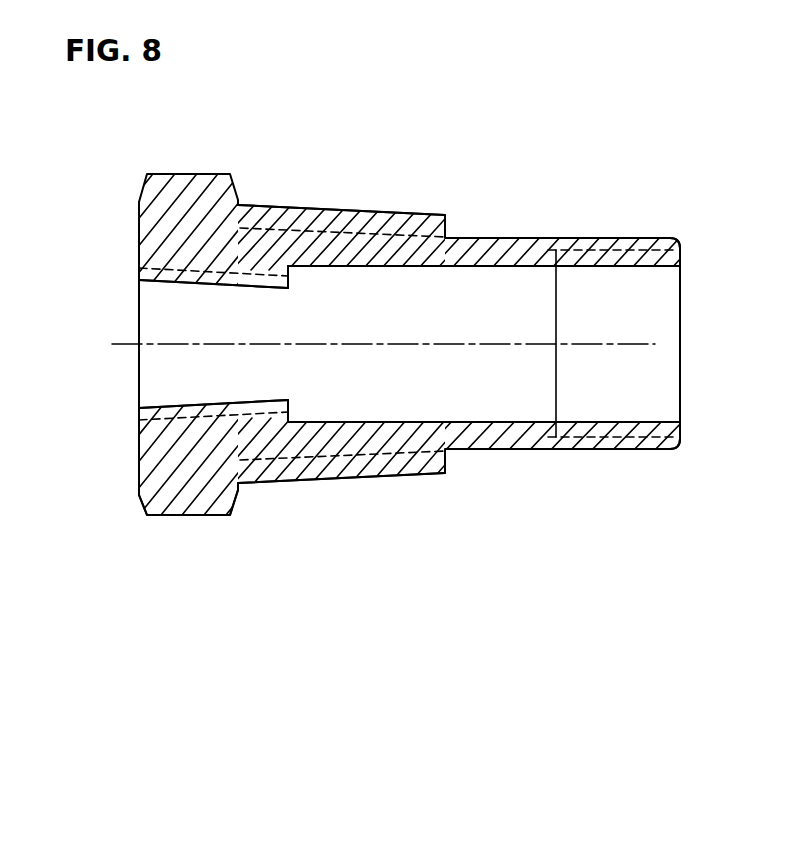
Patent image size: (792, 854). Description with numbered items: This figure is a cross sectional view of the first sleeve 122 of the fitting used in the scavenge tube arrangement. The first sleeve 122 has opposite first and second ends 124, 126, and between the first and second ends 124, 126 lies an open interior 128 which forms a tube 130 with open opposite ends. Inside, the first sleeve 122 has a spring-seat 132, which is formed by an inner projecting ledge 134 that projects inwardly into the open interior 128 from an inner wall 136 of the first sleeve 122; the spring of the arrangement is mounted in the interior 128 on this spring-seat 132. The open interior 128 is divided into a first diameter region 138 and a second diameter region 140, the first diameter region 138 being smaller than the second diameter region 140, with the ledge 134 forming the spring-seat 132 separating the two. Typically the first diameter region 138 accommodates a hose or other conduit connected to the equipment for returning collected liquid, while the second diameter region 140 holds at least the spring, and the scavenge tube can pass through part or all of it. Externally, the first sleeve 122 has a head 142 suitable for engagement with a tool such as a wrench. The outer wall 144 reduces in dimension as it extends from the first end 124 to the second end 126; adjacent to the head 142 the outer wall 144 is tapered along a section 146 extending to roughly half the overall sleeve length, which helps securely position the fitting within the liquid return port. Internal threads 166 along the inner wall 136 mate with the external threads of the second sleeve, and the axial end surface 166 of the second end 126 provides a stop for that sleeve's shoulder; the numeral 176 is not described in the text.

The first sleeve 122 is at (347, 139).
The first end 124 is at (138, 226).
The second end 126 is at (674, 247).
The open interior 128 is at (488, 416).
The tube 130 is at (478, 267).
The spring-seat 132 is at (289, 408).
The inner projecting ledge 134 is at (292, 282).
The inner wall 136 is at (388, 422).
The first diameter region 138 is at (147, 406).
The second diameter region 140 is at (660, 420).
The head 142 is at (177, 518).
The outer wall 144 is at (397, 212).
The tapered section 146 is at (332, 477).
The internal threads 166 is at (660, 267).
The tube end 176 is at (676, 436).